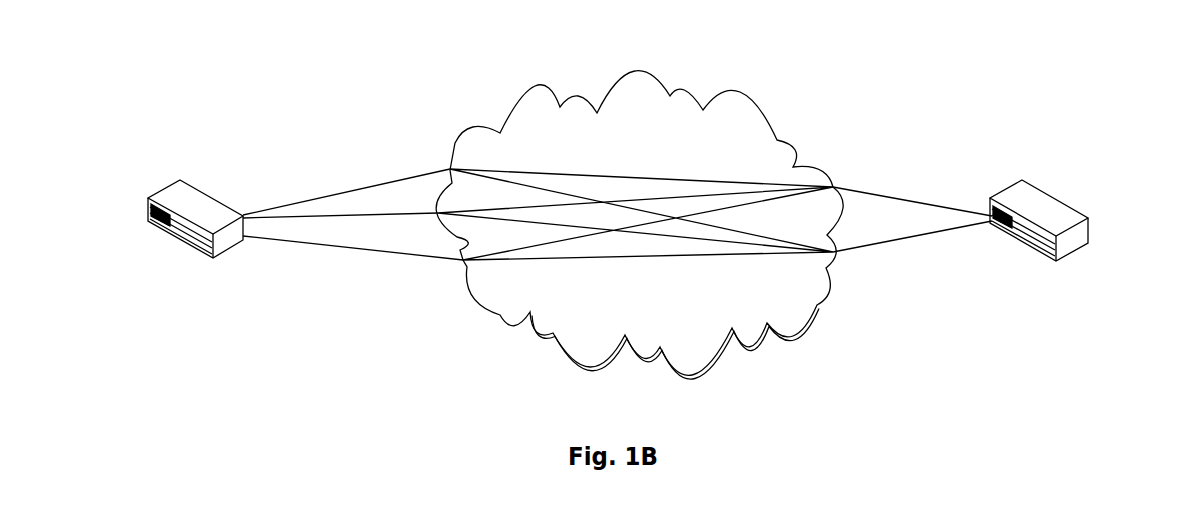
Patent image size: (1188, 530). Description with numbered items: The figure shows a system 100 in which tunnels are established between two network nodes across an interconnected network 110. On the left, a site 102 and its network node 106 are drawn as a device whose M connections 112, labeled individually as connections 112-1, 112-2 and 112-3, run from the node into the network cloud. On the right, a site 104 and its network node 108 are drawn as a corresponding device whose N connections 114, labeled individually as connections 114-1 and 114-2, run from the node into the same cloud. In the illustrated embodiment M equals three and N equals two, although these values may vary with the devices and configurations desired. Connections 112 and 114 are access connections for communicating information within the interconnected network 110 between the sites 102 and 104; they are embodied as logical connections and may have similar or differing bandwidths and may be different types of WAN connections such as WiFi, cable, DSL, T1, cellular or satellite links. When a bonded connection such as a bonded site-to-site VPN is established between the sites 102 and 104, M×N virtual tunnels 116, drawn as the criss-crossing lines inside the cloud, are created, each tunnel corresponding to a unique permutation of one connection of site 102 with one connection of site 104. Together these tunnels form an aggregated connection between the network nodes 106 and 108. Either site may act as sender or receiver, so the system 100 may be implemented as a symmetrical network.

The system 100 is at (442, 73).
The site 102 is at (146, 196).
The site 104 is at (1084, 208).
The network node 106 is at (165, 238).
The network node 108 is at (1073, 235).
The interconnected network 110 is at (656, 217).
The connections 112 is at (337, 204).
The connection 112-1 is at (345, 193).
The connection 112-2 is at (353, 219).
The connection 112-3 is at (325, 246).
The connections 114 is at (935, 208).
The connection 114-1 is at (917, 201).
The connection 114-2 is at (903, 238).
The virtual tunnels 116 is at (635, 170).